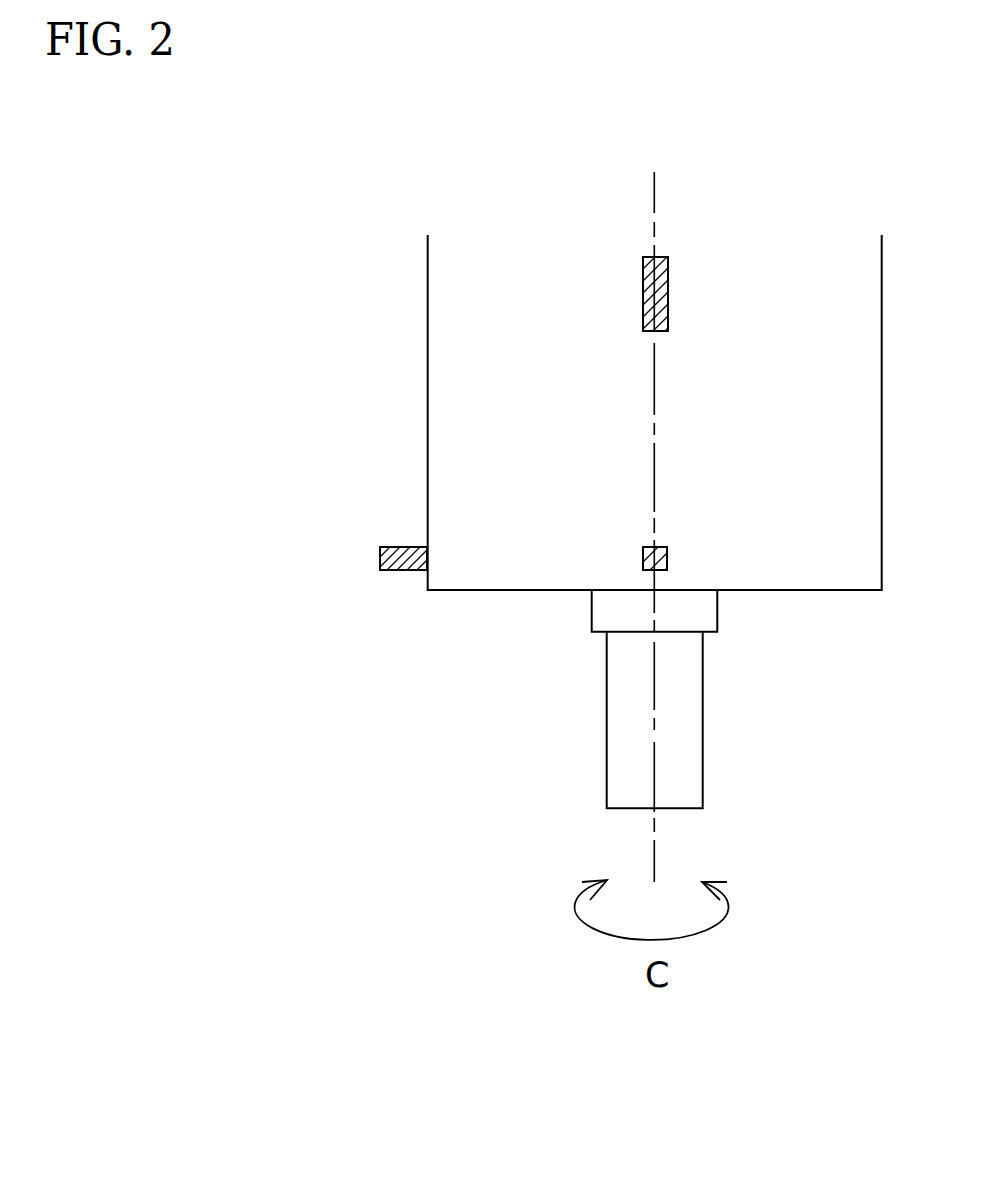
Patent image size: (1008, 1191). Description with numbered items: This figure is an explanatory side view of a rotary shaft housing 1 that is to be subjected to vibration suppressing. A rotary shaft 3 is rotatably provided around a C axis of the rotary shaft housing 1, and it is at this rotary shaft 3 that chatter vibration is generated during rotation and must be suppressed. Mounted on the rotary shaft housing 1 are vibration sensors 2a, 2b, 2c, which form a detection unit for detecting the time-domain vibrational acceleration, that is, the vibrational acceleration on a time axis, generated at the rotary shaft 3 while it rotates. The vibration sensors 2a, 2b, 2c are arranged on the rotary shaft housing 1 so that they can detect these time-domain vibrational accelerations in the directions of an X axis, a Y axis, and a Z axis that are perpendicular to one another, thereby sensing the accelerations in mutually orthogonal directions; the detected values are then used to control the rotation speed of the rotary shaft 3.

The rotary shaft housing 1 is at (443, 370).
The vibration sensor 2a is at (378, 550).
The vibration sensor 2b is at (670, 555).
The vibration sensor 2c is at (668, 288).
The rotary shaft 3 is at (622, 717).